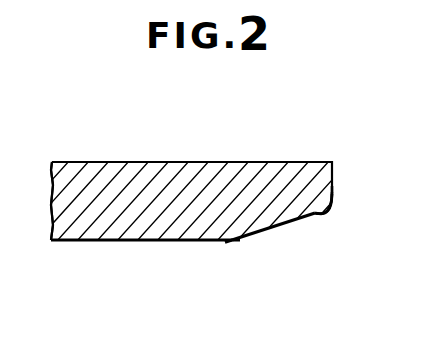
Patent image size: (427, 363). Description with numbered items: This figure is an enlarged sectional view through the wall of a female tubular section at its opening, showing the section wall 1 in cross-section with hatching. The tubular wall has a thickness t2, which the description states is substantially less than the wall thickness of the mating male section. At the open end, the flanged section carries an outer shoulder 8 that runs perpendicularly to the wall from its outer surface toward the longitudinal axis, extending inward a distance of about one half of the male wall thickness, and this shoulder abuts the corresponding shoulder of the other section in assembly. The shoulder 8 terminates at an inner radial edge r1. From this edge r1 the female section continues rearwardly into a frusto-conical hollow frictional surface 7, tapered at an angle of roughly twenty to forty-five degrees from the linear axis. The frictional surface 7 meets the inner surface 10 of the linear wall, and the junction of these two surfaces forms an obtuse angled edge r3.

The plate body 1 is at (205, 162).
The inner surface 10 is at (152, 242).
The frusto-conical hollow frictional surface 7 is at (277, 230).
The outer shoulder 8 is at (335, 190).
The inner radial edge r1 is at (322, 197).
The obtuse angled edge r3 is at (213, 226).
The thickness of the female section t2 is at (53, 180).